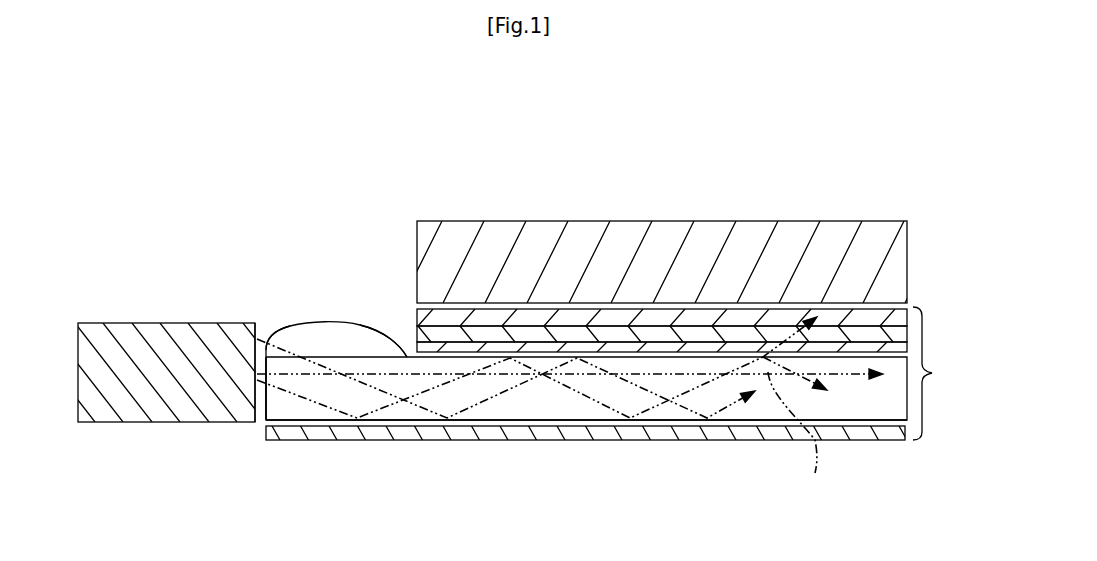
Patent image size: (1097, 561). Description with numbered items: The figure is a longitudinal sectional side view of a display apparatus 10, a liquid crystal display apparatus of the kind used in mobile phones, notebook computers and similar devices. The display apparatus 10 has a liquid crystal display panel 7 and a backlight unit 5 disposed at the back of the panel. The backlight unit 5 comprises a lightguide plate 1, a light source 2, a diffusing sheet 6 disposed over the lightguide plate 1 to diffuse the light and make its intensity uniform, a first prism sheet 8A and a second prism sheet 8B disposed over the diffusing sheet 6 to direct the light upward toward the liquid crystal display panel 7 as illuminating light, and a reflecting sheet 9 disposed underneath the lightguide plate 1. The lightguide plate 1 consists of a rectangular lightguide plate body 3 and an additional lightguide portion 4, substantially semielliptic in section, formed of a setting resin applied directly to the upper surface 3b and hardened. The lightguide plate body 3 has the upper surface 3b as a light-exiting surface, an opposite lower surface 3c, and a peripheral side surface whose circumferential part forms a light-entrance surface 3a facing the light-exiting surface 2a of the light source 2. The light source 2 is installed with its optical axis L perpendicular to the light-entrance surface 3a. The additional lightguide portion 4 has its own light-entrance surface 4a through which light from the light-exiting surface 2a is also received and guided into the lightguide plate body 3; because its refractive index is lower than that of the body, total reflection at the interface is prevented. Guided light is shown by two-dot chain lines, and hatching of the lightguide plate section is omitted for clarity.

The lightguide plate 1 is at (370, 260).
The light source 2 is at (155, 323).
The light-exiting surface 2a is at (262, 327).
The lightguide plate body 3 is at (413, 436).
The light-entrance surface 3a is at (264, 402).
The upper surface 3b is at (363, 357).
The lower surface 3c is at (297, 420).
The additional lightguide portion 4 is at (337, 310).
The light-entrance surface 4a is at (272, 337).
The backlight unit 5 is at (932, 372).
The diffusing sheet 6 is at (458, 352).
The liquid crystal display panel 7 is at (627, 220).
The first prism sheet 8A is at (523, 330).
The second prism sheet 8B is at (588, 322).
The reflecting sheet 9 is at (348, 440).
The display apparatus 10 is at (778, 187).
The optical axis L is at (570, 410).